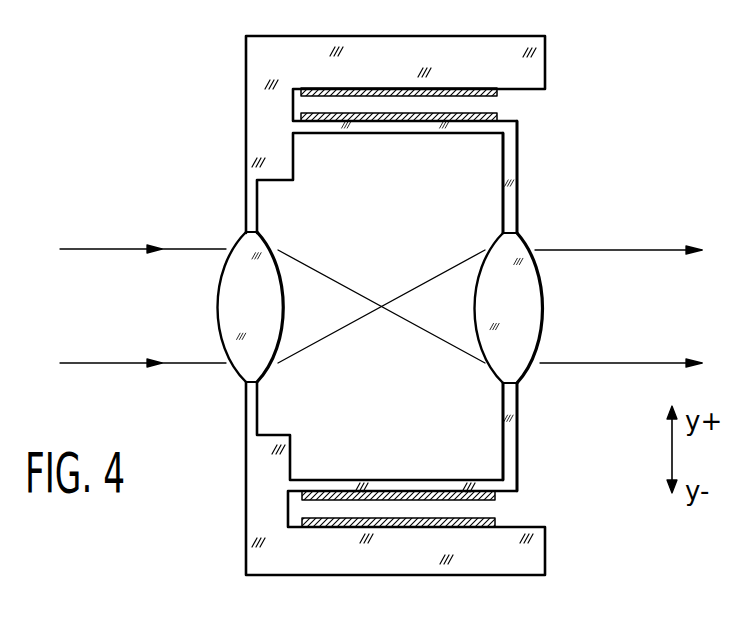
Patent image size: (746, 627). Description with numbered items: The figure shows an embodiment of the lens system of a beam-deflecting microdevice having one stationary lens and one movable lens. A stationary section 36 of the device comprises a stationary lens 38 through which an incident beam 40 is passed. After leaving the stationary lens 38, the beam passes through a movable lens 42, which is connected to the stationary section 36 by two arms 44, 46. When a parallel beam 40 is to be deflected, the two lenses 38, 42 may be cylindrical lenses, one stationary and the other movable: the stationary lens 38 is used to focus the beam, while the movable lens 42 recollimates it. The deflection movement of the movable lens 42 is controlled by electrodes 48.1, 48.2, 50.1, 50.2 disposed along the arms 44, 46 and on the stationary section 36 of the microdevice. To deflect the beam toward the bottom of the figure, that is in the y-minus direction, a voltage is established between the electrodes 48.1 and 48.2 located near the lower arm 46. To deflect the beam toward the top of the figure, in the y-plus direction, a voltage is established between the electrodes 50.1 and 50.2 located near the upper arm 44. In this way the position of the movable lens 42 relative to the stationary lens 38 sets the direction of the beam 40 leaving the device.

The stationary section 36 is at (247, 93).
The stationary lens 38 is at (267, 247).
The incident beam 40 is at (130, 260).
The movable lens 42 is at (509, 355).
The arm 44 is at (513, 167).
The arm 46 is at (510, 447).
The electrode 48.1 is at (410, 497).
The electrode 48.2 is at (480, 522).
The electrode 50.1 is at (490, 88).
The electrode 50.2 is at (493, 110).